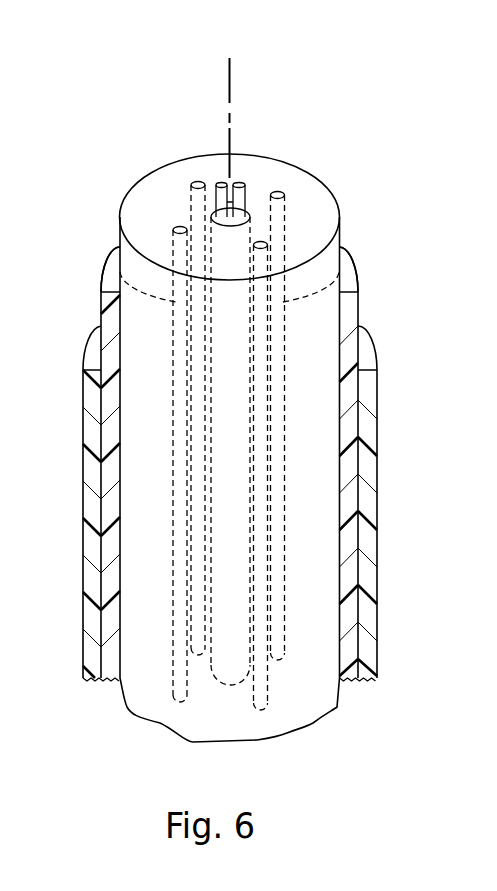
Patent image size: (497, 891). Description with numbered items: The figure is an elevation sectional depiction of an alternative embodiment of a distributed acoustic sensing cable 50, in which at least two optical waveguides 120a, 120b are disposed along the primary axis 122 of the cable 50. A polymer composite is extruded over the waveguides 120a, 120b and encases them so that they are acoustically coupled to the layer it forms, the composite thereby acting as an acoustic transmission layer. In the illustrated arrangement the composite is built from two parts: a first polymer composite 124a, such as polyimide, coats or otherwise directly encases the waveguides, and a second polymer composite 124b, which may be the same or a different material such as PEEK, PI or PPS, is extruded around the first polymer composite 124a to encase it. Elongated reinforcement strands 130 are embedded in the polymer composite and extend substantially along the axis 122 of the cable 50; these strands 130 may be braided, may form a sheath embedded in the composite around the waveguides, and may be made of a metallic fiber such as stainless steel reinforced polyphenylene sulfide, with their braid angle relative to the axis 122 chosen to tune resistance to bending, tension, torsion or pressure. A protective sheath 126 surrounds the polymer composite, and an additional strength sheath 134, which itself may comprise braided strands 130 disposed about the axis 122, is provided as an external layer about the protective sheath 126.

The distributed acoustic sensing cable 50 is at (240, 408).
The primary axis 122 is at (227, 72).
The optical waveguide 120a is at (220, 180).
The optical waveguide 120b is at (248, 188).
The second polymer composite 124b is at (304, 180).
The first polymer composite 124a is at (217, 687).
The elongated reinforcement strands 130 is at (103, 268).
The protective sheath 126 is at (353, 463).
The strength sheath 134 is at (368, 537).